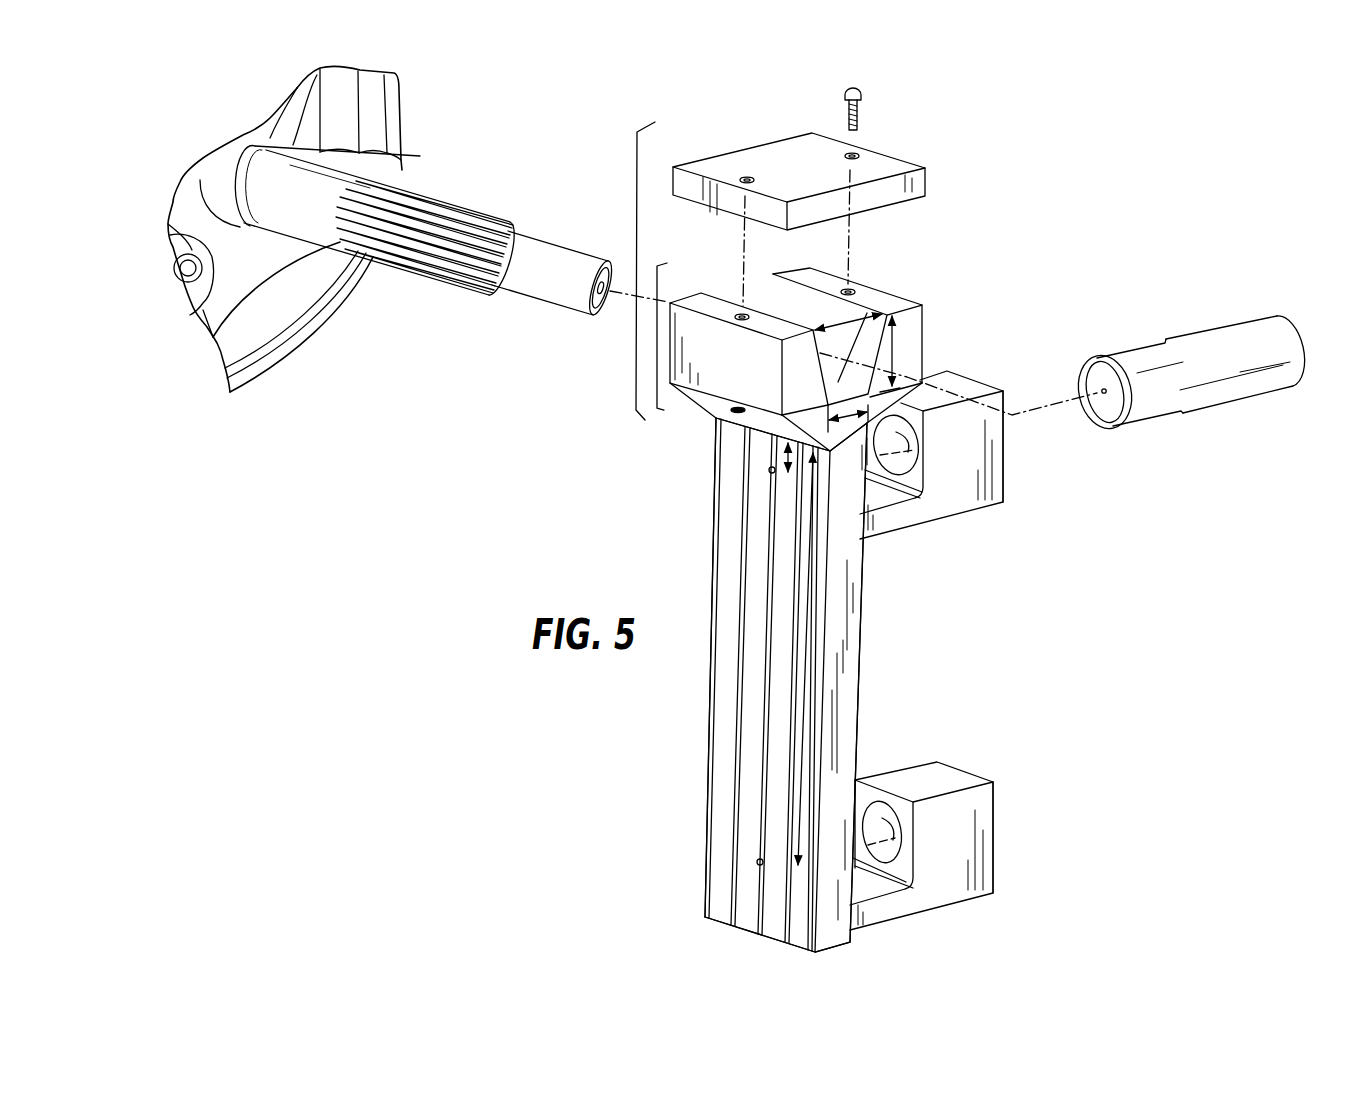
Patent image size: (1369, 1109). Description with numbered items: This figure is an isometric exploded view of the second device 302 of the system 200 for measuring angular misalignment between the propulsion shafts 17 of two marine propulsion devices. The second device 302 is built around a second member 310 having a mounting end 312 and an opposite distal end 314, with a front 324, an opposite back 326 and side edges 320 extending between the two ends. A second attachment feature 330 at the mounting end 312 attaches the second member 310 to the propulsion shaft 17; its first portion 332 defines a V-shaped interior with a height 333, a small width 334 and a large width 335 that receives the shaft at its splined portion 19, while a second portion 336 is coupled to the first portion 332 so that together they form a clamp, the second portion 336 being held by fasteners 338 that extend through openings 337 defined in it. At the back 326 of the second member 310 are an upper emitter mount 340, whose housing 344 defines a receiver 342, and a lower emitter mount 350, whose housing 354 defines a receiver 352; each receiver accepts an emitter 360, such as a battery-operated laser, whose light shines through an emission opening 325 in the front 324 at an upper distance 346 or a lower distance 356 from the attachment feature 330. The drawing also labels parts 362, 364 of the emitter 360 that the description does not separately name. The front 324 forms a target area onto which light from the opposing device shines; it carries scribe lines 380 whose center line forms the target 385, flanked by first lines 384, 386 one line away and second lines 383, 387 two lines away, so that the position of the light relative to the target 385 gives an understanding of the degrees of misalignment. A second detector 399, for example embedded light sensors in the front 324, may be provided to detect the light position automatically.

The propulsion shaft 17 is at (425, 304).
The splined portion 19 is at (541, 203).
The system 200 is at (1162, 155).
The second device 302 is at (1001, 136).
The second member 310 is at (859, 650).
The mounting end 312 is at (947, 279).
The distal end 314 is at (866, 944).
The side edges 320 is at (848, 695).
The front 324 is at (723, 804).
The emission opening 325 is at (764, 473).
The back 326 is at (866, 558).
The second attachment feature 330 is at (636, 175).
The first portion 332 is at (657, 266).
The height 333 is at (900, 346).
The small width 334 is at (858, 420).
The large width 335 is at (838, 382).
The second portion 336 is at (735, 125).
The openings 337 is at (860, 153).
The fasteners 338 is at (881, 99).
The upper emitter mount 340 is at (1058, 513).
The receiver 342 is at (925, 410).
The housing 344 is at (958, 498).
The upper distance 346 is at (783, 451).
The lower emitter mount 350 is at (1003, 864).
The receiver 352 is at (877, 823).
The housing 354 is at (972, 833).
The lower distance 356 is at (803, 700).
The emitter 360 is at (1210, 424).
The pin center point 362 is at (1104, 401).
The pin body 364 is at (1236, 343).
The scribe lines 380 is at (808, 893).
The second line 383 is at (706, 922).
The first line 384 is at (731, 932).
The target 385 is at (758, 942).
The first line 386 is at (784, 948).
The second line 387 is at (811, 955).
The second detector 399 is at (723, 741).